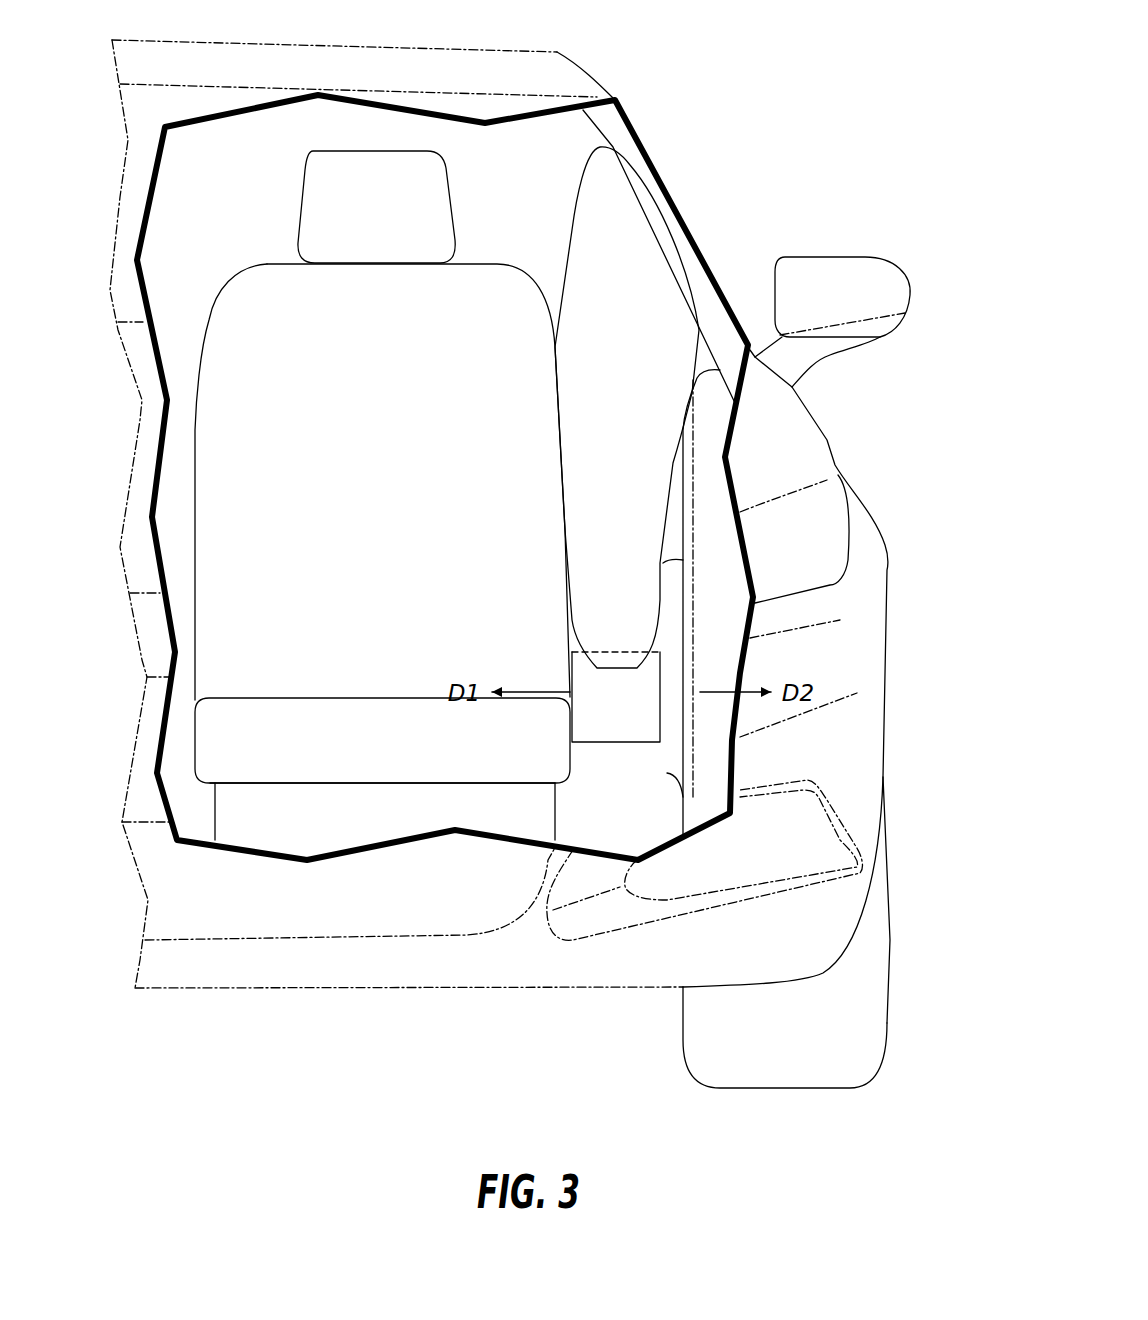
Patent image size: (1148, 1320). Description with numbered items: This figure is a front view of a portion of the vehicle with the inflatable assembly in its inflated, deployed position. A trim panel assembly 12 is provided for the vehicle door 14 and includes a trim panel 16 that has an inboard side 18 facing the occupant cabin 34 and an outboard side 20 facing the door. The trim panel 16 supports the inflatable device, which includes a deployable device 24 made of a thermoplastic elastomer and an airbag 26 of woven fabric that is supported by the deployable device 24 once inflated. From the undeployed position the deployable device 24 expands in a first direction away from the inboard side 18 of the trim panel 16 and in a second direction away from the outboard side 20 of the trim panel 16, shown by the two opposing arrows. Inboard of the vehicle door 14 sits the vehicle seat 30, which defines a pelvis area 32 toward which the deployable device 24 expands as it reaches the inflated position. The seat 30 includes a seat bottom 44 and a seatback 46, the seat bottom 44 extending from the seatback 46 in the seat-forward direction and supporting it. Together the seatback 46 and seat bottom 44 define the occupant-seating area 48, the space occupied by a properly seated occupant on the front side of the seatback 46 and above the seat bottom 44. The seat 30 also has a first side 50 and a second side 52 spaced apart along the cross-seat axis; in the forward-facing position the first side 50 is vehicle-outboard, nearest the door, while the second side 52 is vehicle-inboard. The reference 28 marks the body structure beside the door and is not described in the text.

The trim panel assembly 12 is at (638, 771).
The vehicle door 14 is at (688, 168).
The trim panel 16 is at (665, 775).
The inboard side 18 is at (621, 757).
The outboard side 20 is at (707, 566).
The deployable device 24 is at (540, 529).
The airbag 26 is at (607, 180).
The A-pillar 28 is at (697, 227).
The vehicle seat 30 is at (358, 748).
The pelvis area 32 is at (455, 662).
The occupant cabin 34 is at (553, 140).
The seat bottom 44 is at (198, 762).
The seatback 46 is at (203, 437).
The occupant-seating area 48 is at (464, 305).
The first side 50 is at (545, 755).
The second side 52 is at (227, 756).